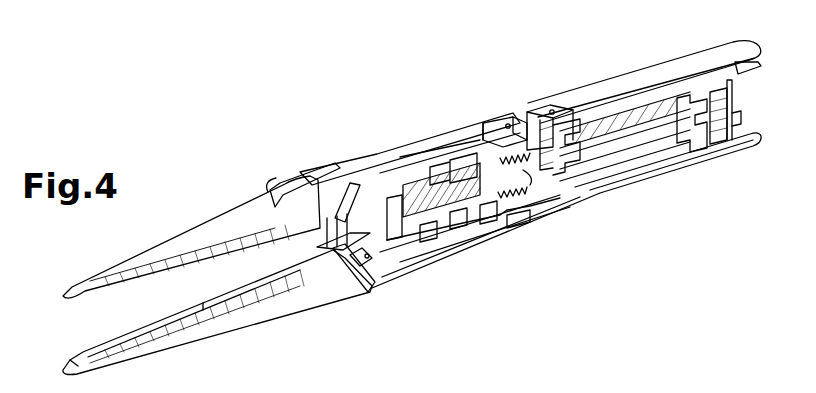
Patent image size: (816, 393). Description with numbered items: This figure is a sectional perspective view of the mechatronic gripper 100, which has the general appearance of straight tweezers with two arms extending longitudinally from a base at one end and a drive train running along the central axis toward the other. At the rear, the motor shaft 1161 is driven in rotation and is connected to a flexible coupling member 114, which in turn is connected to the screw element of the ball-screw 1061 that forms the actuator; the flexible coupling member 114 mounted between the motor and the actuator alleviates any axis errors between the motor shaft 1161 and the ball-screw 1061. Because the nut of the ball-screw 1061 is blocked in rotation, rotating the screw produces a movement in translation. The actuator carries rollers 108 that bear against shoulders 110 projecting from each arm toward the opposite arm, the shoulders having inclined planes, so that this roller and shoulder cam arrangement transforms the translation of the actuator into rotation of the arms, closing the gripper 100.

The mechatronic gripper 100 is at (214, 70).
The rollers 108 is at (306, 245).
The shoulders 110 is at (284, 184).
The ball-screw 1061 is at (437, 205).
The flexible coupling member 114 is at (537, 160).
The motor shaft 1161 is at (645, 138).